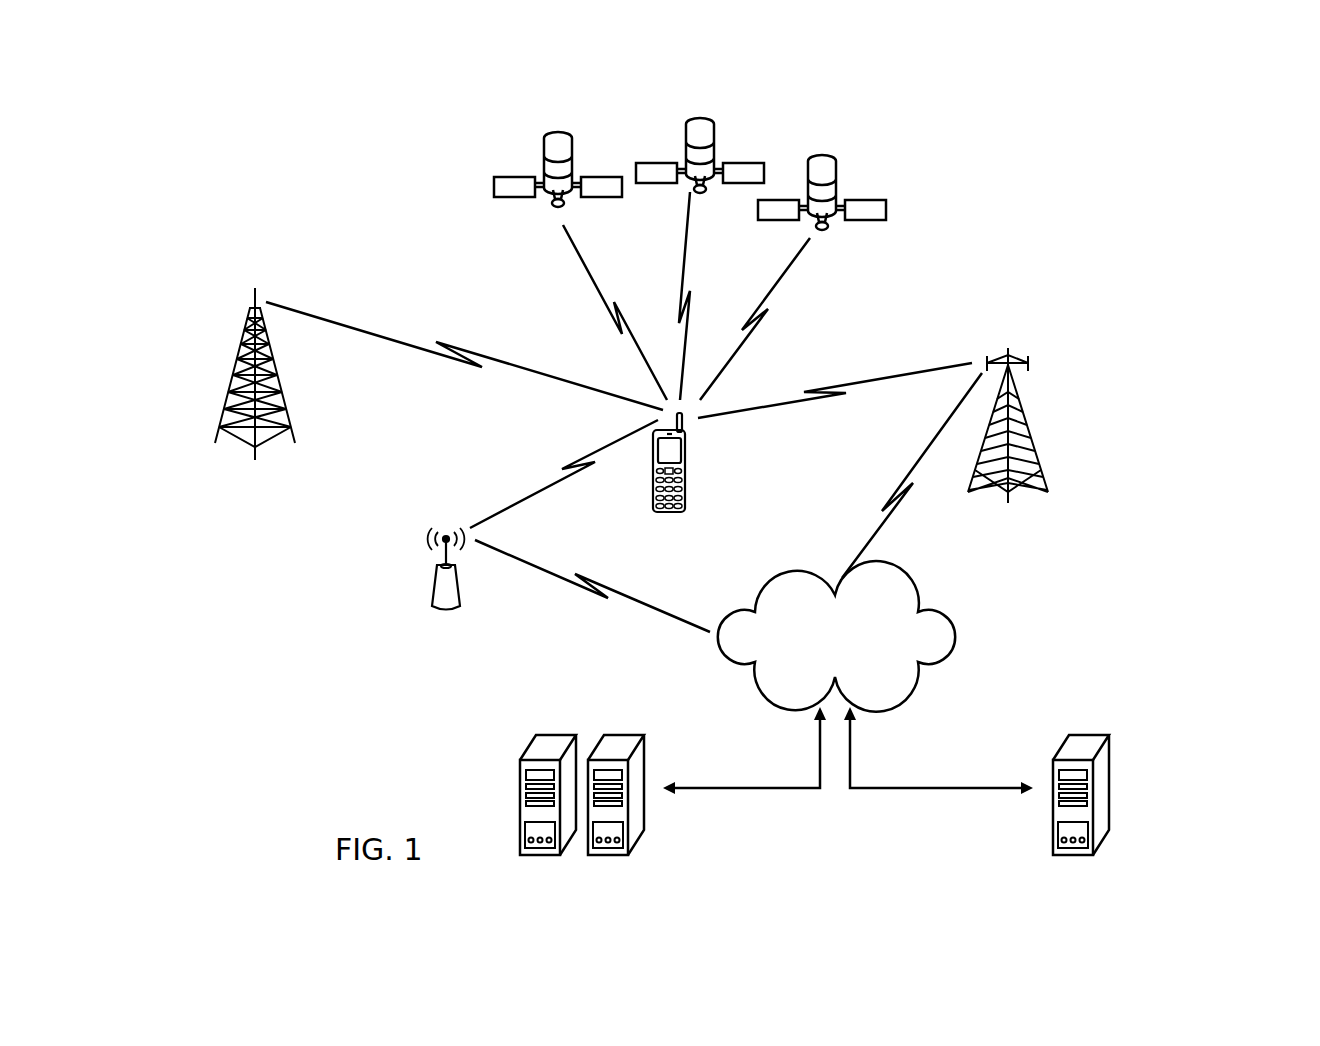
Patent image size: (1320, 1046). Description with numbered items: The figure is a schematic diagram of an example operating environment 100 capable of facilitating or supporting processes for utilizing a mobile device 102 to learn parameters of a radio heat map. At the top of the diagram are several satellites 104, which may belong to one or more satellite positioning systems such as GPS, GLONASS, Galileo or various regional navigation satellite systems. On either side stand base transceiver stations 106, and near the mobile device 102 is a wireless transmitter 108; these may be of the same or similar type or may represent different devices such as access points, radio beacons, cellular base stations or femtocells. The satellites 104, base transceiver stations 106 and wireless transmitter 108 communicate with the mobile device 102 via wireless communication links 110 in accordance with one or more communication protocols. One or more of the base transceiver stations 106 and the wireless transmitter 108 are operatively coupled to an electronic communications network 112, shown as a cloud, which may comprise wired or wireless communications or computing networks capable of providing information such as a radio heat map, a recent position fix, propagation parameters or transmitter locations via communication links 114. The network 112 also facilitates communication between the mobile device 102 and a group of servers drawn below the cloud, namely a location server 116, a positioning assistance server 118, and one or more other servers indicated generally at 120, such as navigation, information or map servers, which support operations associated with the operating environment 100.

The operating environment 100 is at (1124, 144).
The mobile device 102 is at (686, 466).
The satellites 104 is at (557, 130).
The base transceiver stations 106 is at (243, 365).
The wireless transmitters 108 is at (436, 580).
The wireless communication links 110 is at (421, 352).
The electronic communications network 112 is at (949, 628).
The wireless communication links 114 is at (590, 578).
The location server 116 is at (554, 736).
The positioning assistance server 118 is at (622, 736).
The other servers 120 is at (1135, 797).